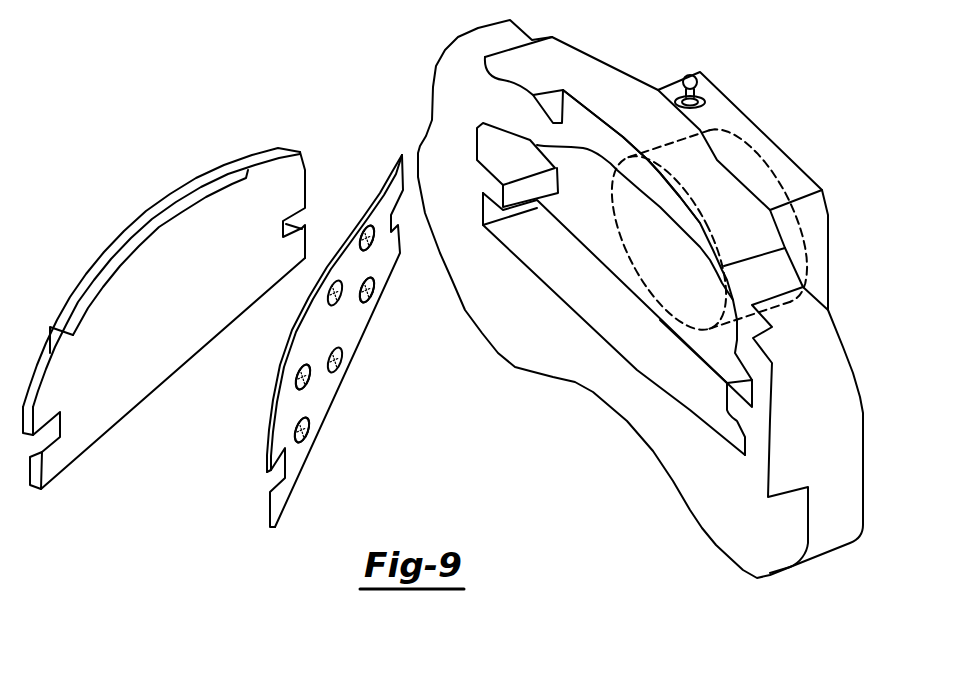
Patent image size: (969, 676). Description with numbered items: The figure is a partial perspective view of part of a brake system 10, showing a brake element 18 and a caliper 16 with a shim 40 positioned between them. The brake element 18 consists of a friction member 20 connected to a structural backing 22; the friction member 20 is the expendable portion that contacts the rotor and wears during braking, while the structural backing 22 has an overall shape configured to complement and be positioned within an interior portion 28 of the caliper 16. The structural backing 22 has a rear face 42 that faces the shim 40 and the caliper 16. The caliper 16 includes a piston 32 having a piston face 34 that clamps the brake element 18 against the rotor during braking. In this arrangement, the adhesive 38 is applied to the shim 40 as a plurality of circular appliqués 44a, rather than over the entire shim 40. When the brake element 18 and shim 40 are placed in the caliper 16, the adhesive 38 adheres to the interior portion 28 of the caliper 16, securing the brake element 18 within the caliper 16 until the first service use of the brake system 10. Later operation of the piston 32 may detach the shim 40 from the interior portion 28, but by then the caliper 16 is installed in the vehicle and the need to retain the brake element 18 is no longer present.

The brake system 10 is at (427, 463).
The caliper 16 is at (823, 413).
The brake element 18 is at (108, 203).
The friction member 20 is at (82, 288).
The structural backing 22 is at (117, 395).
The interior portion 28 is at (722, 348).
The piston 32 is at (775, 172).
The piston face 34 is at (640, 182).
The adhesive 38 is at (330, 294).
The shim 40 is at (386, 180).
The rear face 42 is at (203, 284).
The circular appliqués 44a is at (373, 248).